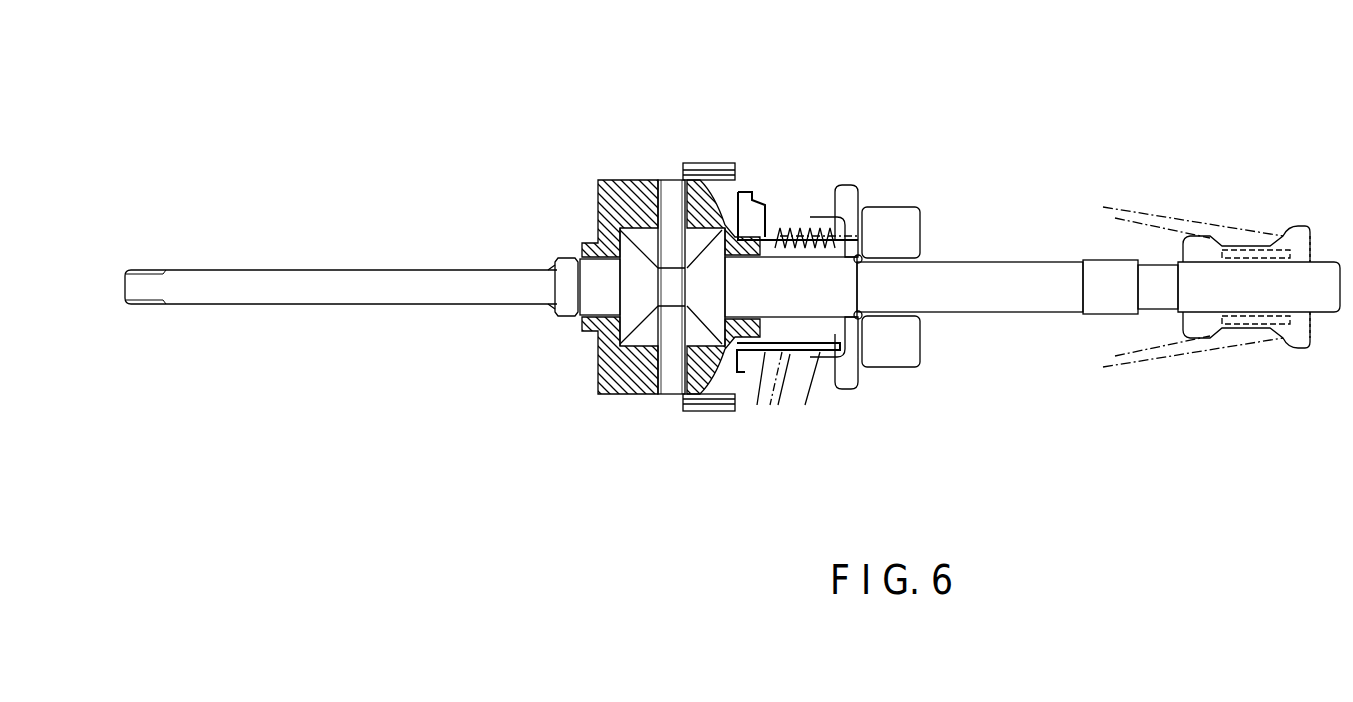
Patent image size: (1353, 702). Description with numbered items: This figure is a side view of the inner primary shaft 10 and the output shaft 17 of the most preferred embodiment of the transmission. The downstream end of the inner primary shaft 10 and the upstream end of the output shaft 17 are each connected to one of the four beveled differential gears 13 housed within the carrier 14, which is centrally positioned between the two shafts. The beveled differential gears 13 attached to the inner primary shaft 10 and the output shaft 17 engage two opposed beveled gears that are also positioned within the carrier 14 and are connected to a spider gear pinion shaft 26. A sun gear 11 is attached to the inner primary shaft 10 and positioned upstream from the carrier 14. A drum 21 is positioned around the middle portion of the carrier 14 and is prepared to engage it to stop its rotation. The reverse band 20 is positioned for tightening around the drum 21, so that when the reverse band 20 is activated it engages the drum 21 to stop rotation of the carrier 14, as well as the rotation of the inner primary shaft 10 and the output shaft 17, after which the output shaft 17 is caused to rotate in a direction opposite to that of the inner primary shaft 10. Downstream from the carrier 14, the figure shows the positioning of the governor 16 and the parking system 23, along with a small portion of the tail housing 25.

The inner primary shaft 10 is at (403, 297).
The sun gear 11 is at (565, 272).
The beveled differential gears 13 is at (688, 335).
The carrier 14 is at (633, 166).
The governor 16 is at (897, 223).
The output shaft 17 is at (1015, 300).
The reverse band 20 is at (718, 158).
The drum 21 is at (744, 170).
The parking system 23 is at (840, 185).
The tail housing 25 is at (1282, 335).
The spider gear pinion shaft 26 is at (670, 343).